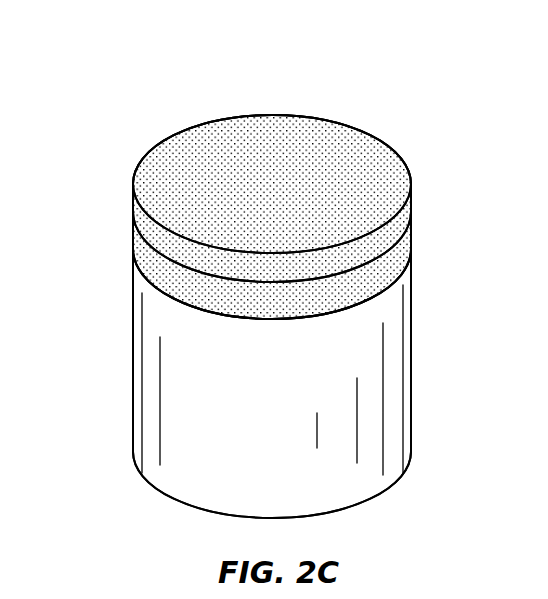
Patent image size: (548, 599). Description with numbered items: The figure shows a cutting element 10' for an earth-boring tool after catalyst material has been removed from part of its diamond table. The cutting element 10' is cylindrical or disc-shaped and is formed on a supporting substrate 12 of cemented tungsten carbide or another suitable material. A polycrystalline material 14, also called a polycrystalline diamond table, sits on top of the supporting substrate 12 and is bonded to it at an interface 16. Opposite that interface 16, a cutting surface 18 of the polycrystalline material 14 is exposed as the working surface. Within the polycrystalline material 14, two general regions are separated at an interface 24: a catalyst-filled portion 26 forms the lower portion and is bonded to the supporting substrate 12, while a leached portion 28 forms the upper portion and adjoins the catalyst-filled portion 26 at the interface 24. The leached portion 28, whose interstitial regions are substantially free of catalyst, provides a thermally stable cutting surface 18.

The cutting element 10' is at (213, 272).
The supporting substrate 12 is at (413, 425).
The polycrystalline material 14 is at (93, 180).
The interface 16 is at (383, 296).
The cutting surface 18 is at (287, 167).
The interface 24 is at (380, 257).
The catalyst-filled portion 26 is at (390, 275).
The leached portion 28 is at (393, 220).